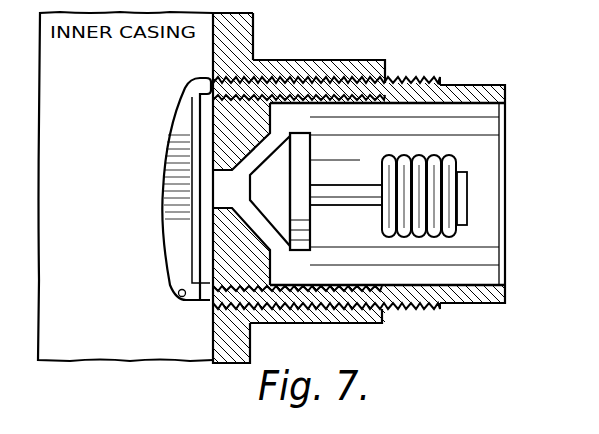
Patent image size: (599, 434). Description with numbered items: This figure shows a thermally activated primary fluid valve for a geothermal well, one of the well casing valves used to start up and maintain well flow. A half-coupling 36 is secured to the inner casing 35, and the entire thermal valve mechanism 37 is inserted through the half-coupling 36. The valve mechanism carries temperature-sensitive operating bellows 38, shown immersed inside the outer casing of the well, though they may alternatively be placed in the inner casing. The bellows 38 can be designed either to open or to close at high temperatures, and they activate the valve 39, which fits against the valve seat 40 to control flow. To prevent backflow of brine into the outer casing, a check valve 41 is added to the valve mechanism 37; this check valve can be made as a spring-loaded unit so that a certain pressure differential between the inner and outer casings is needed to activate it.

The inner casing 35 is at (254, 26).
The half-coupling 36 is at (325, 60).
The thermal valve mechanism 37 is at (433, 82).
The temperature-sensitive operating bellows 38 is at (452, 238).
The valve 39 is at (266, 212).
The valve seat 40 is at (256, 204).
The check valve 41 is at (163, 165).